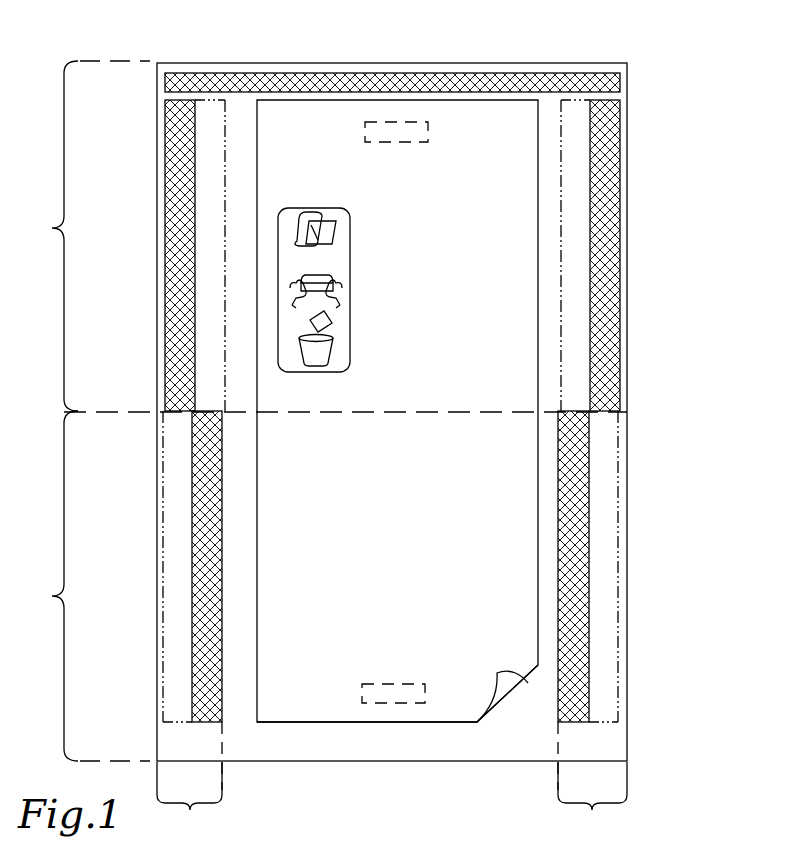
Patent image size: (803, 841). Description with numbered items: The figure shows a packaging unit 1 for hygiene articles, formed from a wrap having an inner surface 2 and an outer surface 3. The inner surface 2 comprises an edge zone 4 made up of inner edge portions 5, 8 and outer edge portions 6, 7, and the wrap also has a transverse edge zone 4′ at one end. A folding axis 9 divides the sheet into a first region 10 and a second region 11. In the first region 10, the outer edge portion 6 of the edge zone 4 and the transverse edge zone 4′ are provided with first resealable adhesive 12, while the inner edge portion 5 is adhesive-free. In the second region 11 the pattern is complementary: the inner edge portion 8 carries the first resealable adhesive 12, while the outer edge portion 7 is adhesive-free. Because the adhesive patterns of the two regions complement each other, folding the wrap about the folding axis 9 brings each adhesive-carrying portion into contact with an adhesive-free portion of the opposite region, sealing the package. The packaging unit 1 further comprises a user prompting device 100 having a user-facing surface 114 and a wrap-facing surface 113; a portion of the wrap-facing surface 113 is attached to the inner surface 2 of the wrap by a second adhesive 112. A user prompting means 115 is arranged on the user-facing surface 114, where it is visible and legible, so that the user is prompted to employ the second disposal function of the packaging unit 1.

The packaging unit 1 is at (730, 95).
The inner surface 2 is at (477, 730).
The outer surface 3 is at (368, 733).
The edge zone 4 is at (392, 780).
The transverse edge zone 4′ is at (538, 88).
The inner edge portion 5 is at (220, 211).
The outer edge portion 6 is at (166, 262).
The outer edge portion 7 is at (173, 641).
The inner edge portion 8 is at (221, 515).
The folding axis 9 is at (471, 412).
The first region 10 is at (85, 236).
The second region 11 is at (86, 586).
The first resealable adhesive 12 is at (212, 83).
The user prompting device 100 is at (322, 142).
The second adhesive 112 is at (405, 128).
The wrap-facing surface 113 is at (514, 677).
The user-facing surface 114 is at (412, 552).
The user prompting means 115 is at (360, 243).